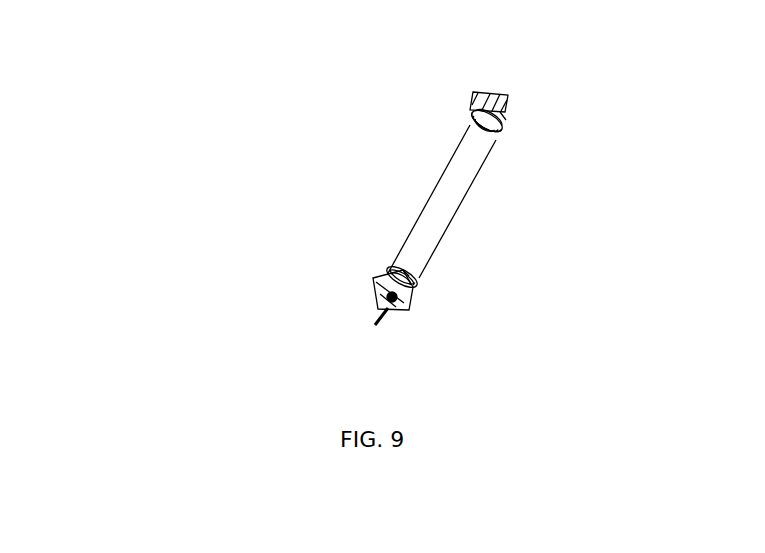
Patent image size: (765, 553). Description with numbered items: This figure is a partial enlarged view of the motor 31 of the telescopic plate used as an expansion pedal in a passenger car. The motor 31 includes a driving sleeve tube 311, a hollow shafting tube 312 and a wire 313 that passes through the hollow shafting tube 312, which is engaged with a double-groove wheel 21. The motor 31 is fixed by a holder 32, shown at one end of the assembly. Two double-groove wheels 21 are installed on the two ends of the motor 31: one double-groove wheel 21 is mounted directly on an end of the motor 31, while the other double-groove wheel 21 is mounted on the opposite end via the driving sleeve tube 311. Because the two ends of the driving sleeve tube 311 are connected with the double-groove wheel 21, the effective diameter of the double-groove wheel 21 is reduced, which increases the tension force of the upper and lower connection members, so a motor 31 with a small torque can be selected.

The motor 31 is at (133, 75).
The driving sleeve tube 311 is at (452, 187).
The hollow shafting tube 312 is at (373, 287).
The wire 313 is at (380, 315).
The holder 32 is at (478, 93).
The double-groove wheel 21 is at (505, 118).